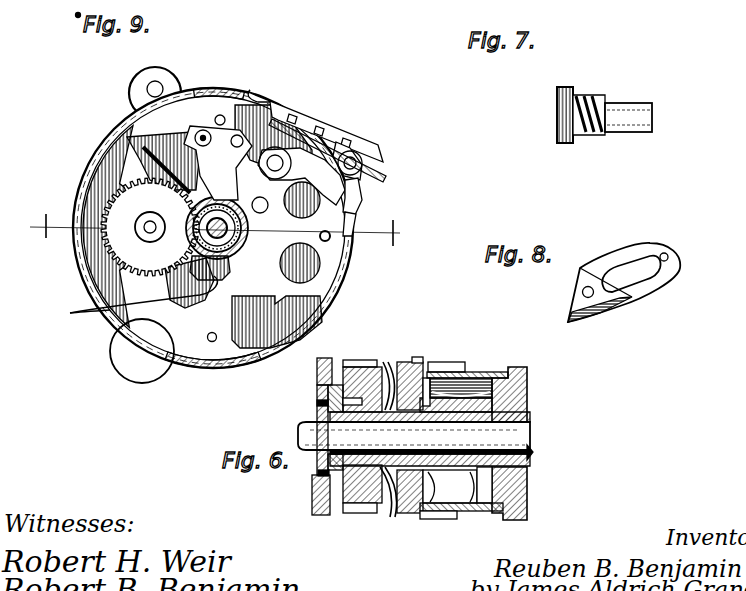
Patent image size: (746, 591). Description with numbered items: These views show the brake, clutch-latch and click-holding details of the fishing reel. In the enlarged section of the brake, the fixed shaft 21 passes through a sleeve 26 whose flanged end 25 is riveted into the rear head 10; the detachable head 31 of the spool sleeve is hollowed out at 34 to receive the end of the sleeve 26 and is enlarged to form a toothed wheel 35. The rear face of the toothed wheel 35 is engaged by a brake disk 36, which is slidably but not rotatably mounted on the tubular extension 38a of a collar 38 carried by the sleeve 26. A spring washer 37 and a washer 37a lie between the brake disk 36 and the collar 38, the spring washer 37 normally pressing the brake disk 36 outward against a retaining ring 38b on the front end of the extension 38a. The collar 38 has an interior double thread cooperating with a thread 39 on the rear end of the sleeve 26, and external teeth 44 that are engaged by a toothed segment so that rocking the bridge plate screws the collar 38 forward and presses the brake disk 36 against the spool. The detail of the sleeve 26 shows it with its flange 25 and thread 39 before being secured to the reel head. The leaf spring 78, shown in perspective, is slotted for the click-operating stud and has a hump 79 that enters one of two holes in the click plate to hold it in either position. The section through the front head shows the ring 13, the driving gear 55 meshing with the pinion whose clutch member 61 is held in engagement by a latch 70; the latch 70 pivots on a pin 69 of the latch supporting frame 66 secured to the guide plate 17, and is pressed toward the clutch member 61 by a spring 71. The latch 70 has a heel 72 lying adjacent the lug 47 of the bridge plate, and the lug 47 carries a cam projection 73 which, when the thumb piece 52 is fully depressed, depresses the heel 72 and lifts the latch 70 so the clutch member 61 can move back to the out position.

In FIG. 9, the rear head 10 is at (217, 232).
In FIG. 9, the ring 13 is at (323, 306).
In FIG. 9, the guide plate 17 is at (185, 332).
In FIG. 9, the shaft 21 is at (76, 322).
In FIG. 6, the shaft 21 is at (520, 442).
In FIG. 7, the flanged end 25 is at (560, 128).
In FIG. 6, the flanged end 25 is at (315, 400).
In FIG. 7, the sleeve 26 is at (618, 103).
In FIG. 6, the sleeve 26 is at (478, 512).
In FIG. 6, the detachable head 31 is at (532, 512).
In FIG. 6, the hollow 34 is at (497, 378).
In FIG. 6, the toothed wheel 35 is at (455, 361).
In FIG. 6, the brake disk 36 is at (386, 364).
In FIG. 6, the spring washer 37 is at (400, 514).
In FIG. 6, the washer 37a is at (388, 518).
In FIG. 6, the collar 38 is at (403, 362).
In FIG. 6, the tubular extension 38a is at (530, 374).
In FIG. 6, the retaining ring 38b is at (427, 378).
In FIG. 7, the thread 39 is at (591, 130).
In FIG. 6, the thread 39 is at (314, 480).
In FIG. 6, the teeth 44 is at (357, 361).
In FIG. 9, the lug 47 is at (390, 170).
In FIG. 9, the thumb piece 52 is at (272, 97).
In FIG. 9, the driving gear 55 is at (150, 227).
In FIG. 9, the clutch member 61 is at (240, 238).
In FIG. 9, the latch supporting frame 66 is at (250, 96).
In FIG. 9, the pin 69 is at (333, 133).
In FIG. 9, the latch 70 is at (256, 212).
In FIG. 9, the spring 71 is at (337, 140).
In FIG. 9, the heel 72 is at (355, 215).
In FIG. 9, the cam projection 73 is at (356, 193).
In FIG. 8, the leaf spring 78 is at (618, 296).
In FIG. 8, the hump 79 is at (670, 253).